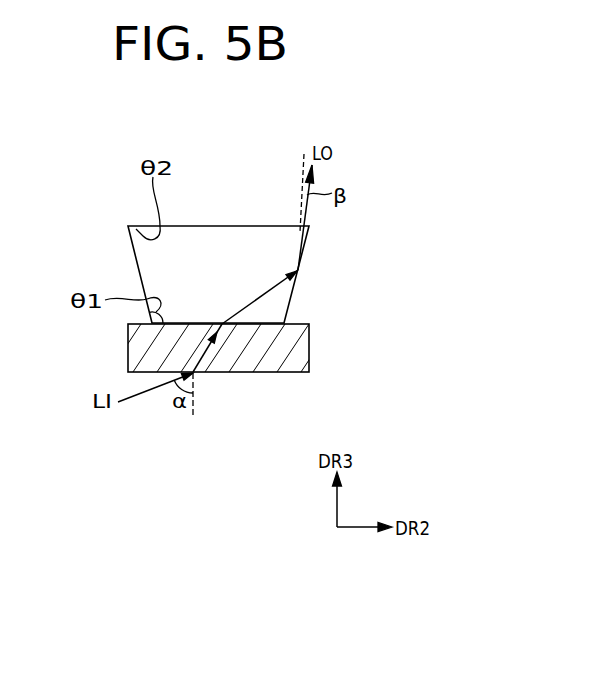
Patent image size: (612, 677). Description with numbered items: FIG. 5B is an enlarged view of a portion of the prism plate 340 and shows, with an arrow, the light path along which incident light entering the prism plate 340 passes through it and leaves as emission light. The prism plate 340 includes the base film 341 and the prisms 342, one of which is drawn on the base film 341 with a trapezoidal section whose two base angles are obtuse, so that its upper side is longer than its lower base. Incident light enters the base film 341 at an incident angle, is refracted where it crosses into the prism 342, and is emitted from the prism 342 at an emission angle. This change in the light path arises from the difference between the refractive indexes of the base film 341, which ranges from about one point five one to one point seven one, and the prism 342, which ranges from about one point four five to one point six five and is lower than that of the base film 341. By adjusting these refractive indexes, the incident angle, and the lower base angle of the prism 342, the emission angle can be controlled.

The prism plate 340 is at (259, 305).
The base film 341 is at (232, 348).
The prism 342 is at (285, 300).